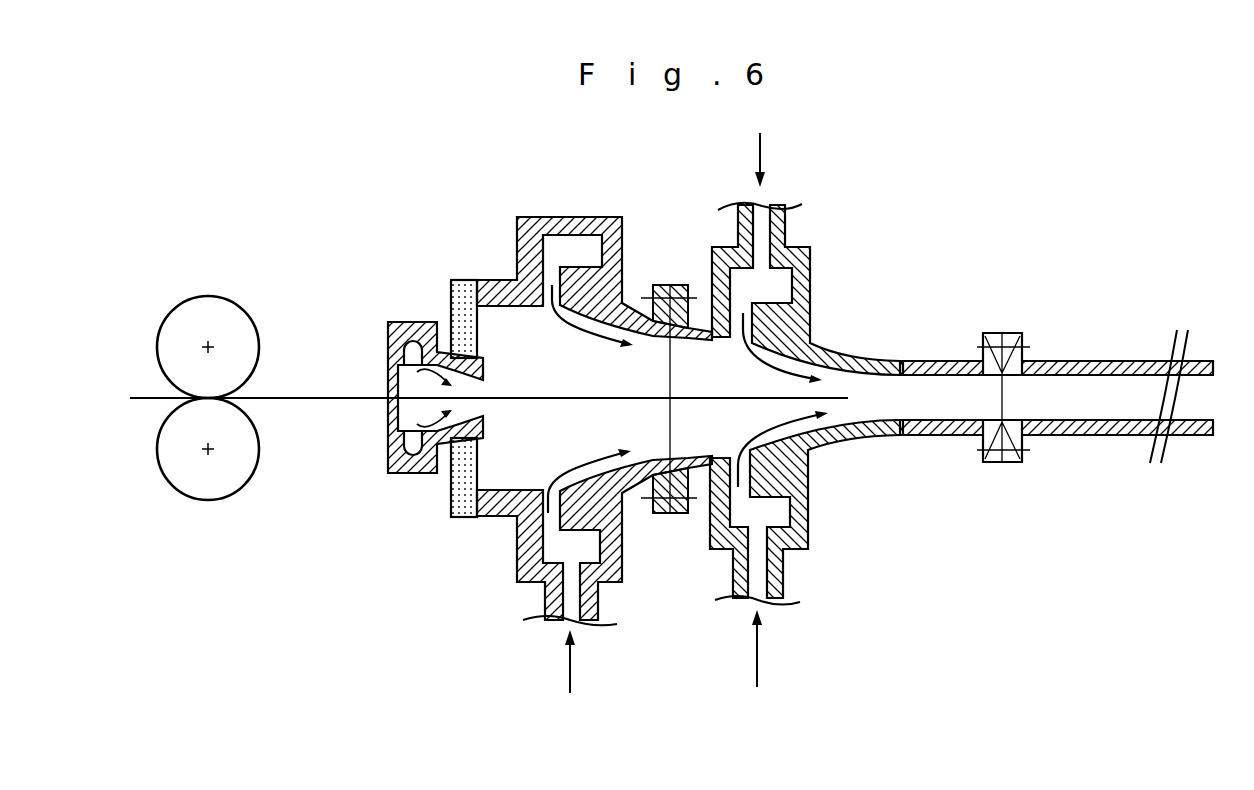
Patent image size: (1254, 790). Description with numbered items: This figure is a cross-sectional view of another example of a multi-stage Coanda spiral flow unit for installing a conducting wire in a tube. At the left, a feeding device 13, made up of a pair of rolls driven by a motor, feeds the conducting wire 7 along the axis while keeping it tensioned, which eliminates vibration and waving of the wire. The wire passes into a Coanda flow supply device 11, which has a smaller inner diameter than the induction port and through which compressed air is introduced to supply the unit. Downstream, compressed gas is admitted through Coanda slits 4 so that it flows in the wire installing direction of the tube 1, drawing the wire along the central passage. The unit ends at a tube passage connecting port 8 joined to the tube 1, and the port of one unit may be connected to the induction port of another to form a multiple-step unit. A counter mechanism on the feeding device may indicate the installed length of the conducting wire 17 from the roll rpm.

The tube 1 is at (1082, 438).
The Coanda slits 4 is at (545, 316).
The conducting wire 7 is at (352, 399).
The tube passage connecting port 8 is at (1000, 397).
The Coanda flow supply device 11 is at (405, 475).
The feeding device 13 is at (252, 443).
The conducting wire 17 is at (450, 305).